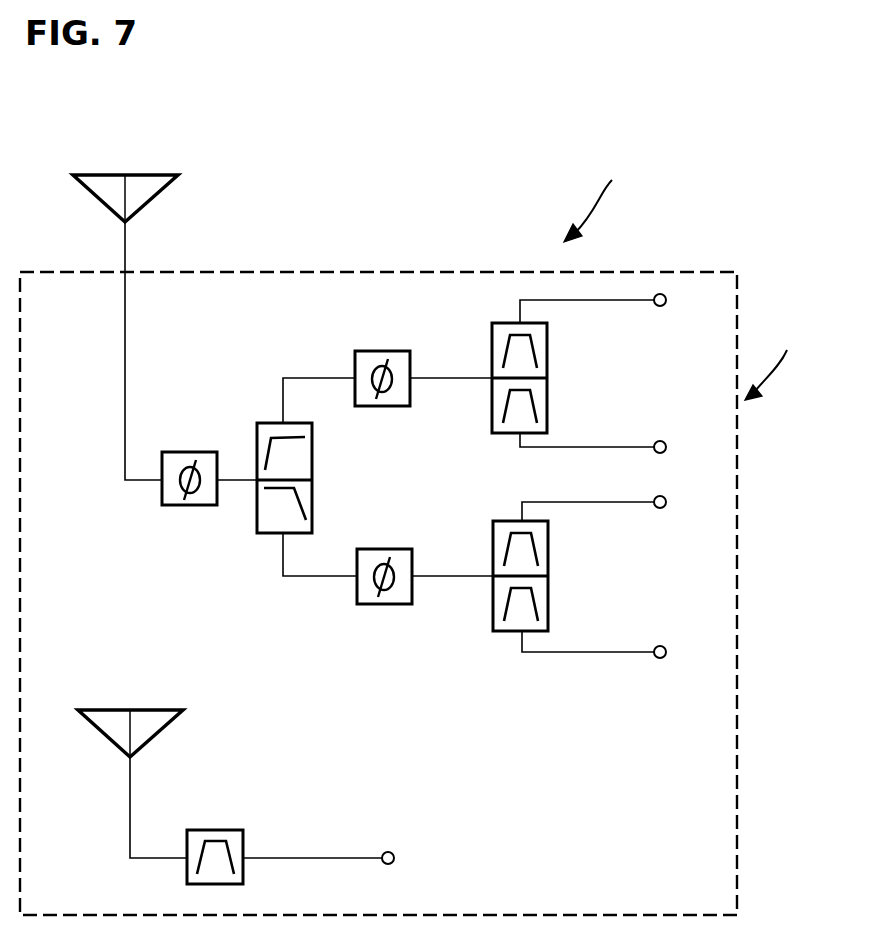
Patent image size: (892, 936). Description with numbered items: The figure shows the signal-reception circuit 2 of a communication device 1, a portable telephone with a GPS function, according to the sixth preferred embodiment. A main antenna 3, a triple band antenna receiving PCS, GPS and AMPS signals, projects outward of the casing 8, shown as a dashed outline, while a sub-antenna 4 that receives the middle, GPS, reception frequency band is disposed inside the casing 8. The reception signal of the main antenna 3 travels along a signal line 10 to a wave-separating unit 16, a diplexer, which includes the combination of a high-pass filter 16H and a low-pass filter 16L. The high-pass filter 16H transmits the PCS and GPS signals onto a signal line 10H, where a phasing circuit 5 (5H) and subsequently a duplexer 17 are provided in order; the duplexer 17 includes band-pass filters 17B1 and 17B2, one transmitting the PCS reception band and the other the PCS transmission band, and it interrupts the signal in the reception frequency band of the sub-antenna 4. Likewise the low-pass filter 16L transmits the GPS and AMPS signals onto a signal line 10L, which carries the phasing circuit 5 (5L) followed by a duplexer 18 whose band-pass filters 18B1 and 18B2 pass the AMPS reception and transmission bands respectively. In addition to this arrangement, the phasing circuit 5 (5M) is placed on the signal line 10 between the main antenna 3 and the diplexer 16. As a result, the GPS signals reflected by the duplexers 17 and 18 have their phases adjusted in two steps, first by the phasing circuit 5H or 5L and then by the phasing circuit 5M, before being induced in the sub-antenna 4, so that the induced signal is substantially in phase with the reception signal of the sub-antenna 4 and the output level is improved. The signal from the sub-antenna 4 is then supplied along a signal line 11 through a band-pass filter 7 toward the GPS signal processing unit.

The communication device 1 is at (603, 194).
The signal-reception circuit 2 is at (780, 360).
The main antenna 3 is at (144, 186).
The sub-antenna 4 is at (149, 720).
The phasing circuit 5 is at (292, 489).
The phasing circuit 5M is at (193, 452).
The phasing circuit 5H is at (372, 351).
The phasing circuit 5L is at (375, 605).
The band-pass filter 7 is at (215, 830).
The casing 8 is at (391, 270).
The signal line 10 is at (125, 378).
The signal line 10H is at (290, 378).
The signal line 10L is at (290, 578).
The signal line 11 is at (130, 797).
The wave-separating unit 16 is at (306, 501).
The high-pass filter 16H is at (298, 450).
The low-pass filter 16L is at (300, 498).
The duplexer 17 is at (599, 373).
The band-pass filter 17B1 is at (547, 358).
The band-pass filter 17B2 is at (547, 405).
The duplexer 18 is at (599, 577).
The band-pass filter 18B1 is at (548, 560).
The band-pass filter 18B2 is at (548, 605).